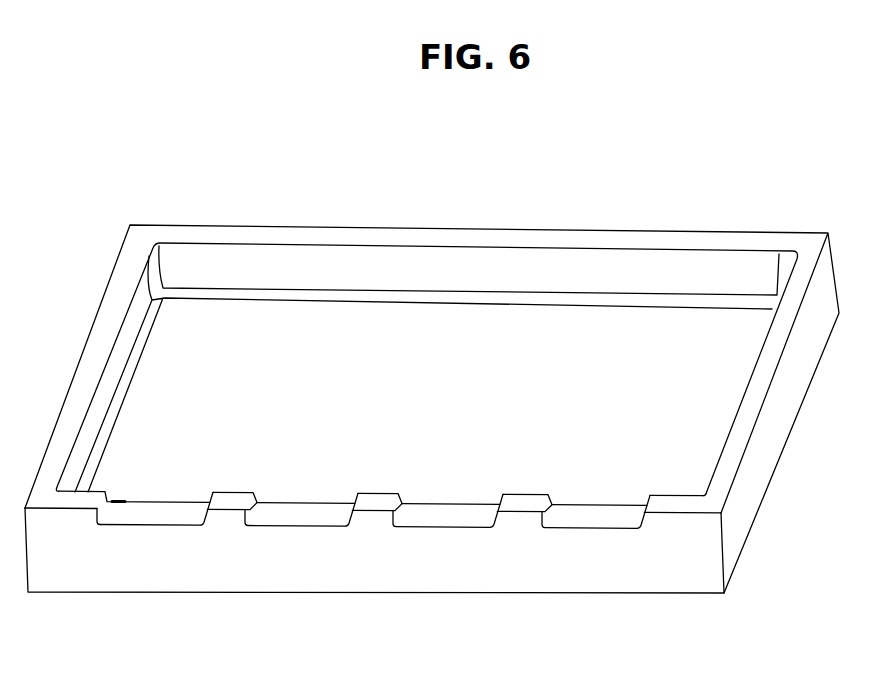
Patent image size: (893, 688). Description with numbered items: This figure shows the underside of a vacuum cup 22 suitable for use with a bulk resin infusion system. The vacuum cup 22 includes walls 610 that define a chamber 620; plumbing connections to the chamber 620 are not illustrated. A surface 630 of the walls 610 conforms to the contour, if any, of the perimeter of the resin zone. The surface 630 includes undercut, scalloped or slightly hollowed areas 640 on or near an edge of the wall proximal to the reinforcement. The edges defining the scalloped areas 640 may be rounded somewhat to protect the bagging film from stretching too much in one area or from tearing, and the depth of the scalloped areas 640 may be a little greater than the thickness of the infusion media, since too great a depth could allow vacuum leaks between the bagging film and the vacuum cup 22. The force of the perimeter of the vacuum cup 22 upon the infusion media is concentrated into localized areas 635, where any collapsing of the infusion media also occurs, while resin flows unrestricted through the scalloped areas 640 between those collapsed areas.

The vacuum cup 22 is at (725, 155).
The walls 610 is at (143, 567).
The chamber 620 is at (240, 428).
The surface 630 is at (668, 502).
The localized areas 635 is at (373, 500).
The scalloped areas 640 is at (423, 512).